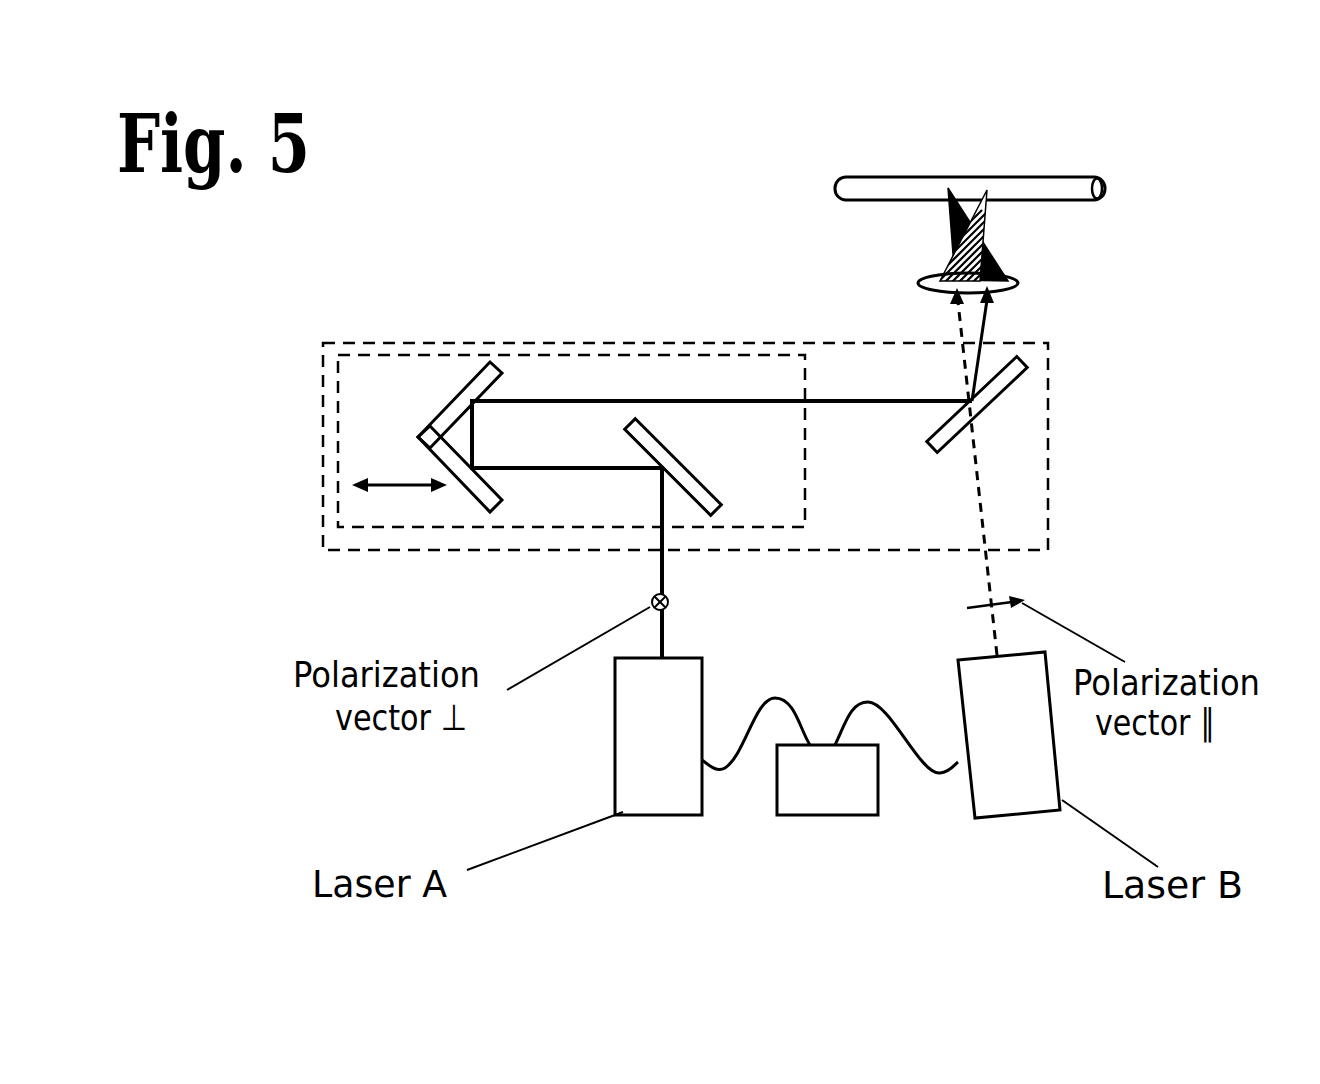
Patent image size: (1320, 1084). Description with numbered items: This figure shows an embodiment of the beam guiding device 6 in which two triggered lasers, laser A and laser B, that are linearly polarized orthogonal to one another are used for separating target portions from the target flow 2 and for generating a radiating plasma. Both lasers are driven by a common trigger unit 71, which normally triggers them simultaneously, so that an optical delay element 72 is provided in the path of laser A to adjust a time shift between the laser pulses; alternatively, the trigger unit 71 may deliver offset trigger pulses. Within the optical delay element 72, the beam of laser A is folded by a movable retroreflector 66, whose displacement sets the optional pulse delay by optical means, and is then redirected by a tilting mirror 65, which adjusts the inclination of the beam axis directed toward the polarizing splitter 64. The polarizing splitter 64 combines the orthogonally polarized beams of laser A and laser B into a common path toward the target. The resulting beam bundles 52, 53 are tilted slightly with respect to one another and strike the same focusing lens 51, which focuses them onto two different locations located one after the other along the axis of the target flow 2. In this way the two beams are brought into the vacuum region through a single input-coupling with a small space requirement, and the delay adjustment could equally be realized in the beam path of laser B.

The target flow 2 is at (837, 182).
The focusing lens 51 is at (1013, 277).
The beam bundle 52 is at (957, 330).
The beam bundle 53 is at (990, 323).
The beam guiding device 6 is at (1048, 485).
The optical delay element 72 is at (757, 527).
The retroreflector 66 is at (453, 400).
The tilting mirror 65 is at (635, 427).
The polarizing splitter 64 is at (1013, 377).
The trigger unit 71 is at (833, 805).